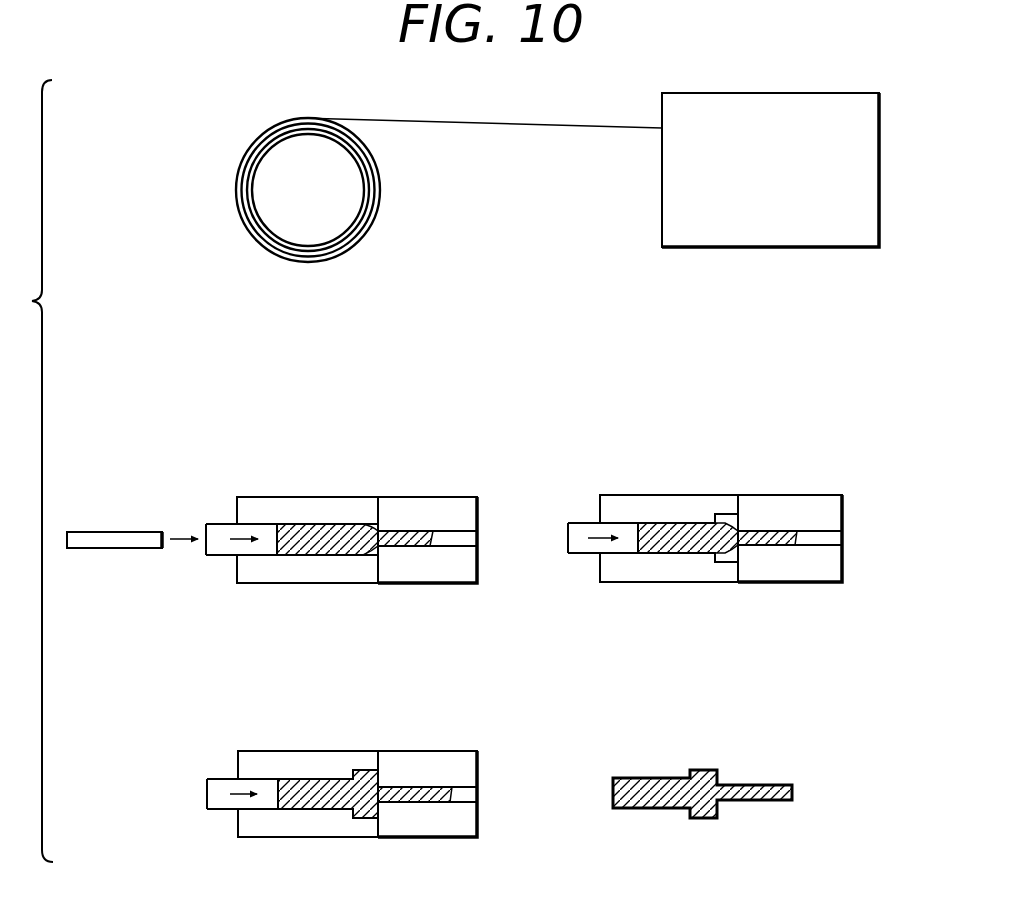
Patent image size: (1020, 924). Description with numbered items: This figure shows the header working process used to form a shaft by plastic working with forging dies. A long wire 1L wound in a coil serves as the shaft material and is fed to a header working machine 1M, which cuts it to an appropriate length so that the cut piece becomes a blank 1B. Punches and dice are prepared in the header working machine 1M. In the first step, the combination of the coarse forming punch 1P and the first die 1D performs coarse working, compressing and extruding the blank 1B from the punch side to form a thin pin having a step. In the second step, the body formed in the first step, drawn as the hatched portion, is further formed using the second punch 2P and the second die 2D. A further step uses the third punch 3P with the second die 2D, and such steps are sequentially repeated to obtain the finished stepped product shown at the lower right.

The long wire 1L is at (308, 233).
The header working machine 1M is at (752, 242).
The blank 1B is at (117, 530).
The coarse forming punch 1P is at (303, 497).
The first die 1D is at (419, 499).
The second punch 2P is at (665, 495).
The second die 2D is at (778, 497).
The third punch 3P is at (290, 751).